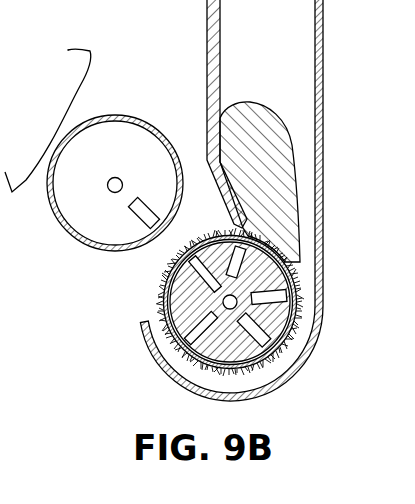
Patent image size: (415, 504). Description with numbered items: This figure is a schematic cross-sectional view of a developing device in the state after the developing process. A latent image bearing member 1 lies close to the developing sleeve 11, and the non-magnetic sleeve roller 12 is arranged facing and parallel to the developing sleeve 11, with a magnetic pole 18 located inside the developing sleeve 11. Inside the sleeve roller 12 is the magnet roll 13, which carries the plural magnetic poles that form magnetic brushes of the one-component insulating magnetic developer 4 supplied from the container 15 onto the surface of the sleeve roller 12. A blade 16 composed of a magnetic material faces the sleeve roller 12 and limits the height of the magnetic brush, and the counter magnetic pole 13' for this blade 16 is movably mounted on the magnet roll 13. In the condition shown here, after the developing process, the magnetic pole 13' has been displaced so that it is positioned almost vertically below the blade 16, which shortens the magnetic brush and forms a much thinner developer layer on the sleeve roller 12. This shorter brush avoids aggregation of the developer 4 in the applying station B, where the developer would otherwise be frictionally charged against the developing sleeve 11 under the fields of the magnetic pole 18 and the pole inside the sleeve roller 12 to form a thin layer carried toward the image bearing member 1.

The latent image bearing member 1 is at (92, 63).
The developing sleeve 11 is at (138, 115).
The magnetic pole 18 is at (143, 205).
The blade 16 is at (226, 196).
The one-component insulating magnetic developer 4 is at (273, 135).
The container 15 is at (325, 52).
The sleeve roller 12 is at (290, 335).
The magnet roll 13 is at (269, 296).
The counter magnetic pole 13' is at (270, 225).
The applying station B is at (173, 243).